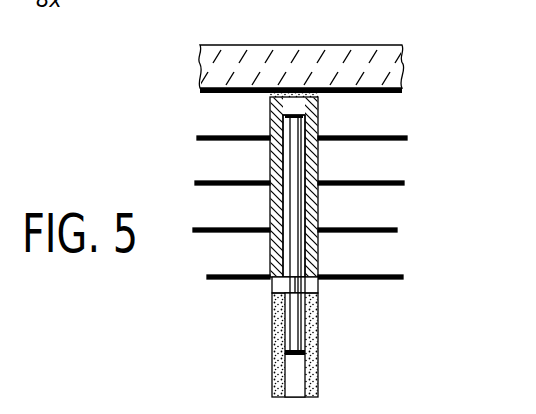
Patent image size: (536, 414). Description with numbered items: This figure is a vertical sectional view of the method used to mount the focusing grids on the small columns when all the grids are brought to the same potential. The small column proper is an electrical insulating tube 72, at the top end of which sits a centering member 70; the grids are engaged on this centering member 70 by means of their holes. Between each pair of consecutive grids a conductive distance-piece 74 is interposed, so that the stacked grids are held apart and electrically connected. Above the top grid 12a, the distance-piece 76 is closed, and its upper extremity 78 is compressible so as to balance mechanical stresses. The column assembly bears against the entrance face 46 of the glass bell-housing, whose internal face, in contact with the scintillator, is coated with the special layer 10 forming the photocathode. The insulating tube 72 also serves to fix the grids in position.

The special layer 10 is at (206, 93).
The top grid 12a is at (386, 143).
The entrance face 46 is at (381, 53).
The centering member 70 is at (320, 258).
The electrical insulating tube 72 is at (312, 378).
The conductive distance-piece 74 is at (283, 258).
The distance-piece 76 is at (276, 110).
The upper extremity 78 is at (322, 97).